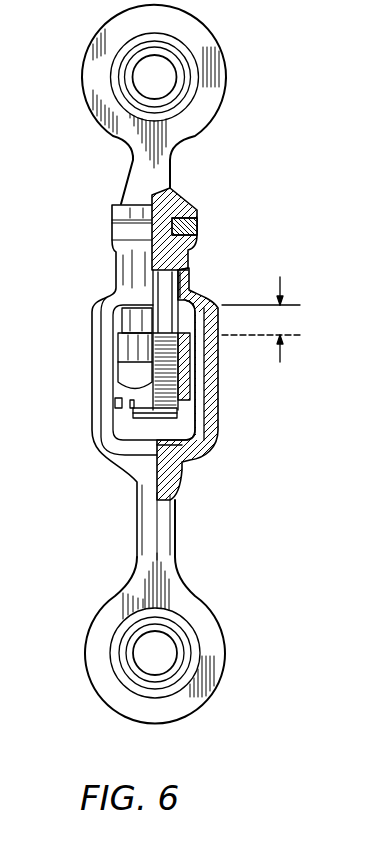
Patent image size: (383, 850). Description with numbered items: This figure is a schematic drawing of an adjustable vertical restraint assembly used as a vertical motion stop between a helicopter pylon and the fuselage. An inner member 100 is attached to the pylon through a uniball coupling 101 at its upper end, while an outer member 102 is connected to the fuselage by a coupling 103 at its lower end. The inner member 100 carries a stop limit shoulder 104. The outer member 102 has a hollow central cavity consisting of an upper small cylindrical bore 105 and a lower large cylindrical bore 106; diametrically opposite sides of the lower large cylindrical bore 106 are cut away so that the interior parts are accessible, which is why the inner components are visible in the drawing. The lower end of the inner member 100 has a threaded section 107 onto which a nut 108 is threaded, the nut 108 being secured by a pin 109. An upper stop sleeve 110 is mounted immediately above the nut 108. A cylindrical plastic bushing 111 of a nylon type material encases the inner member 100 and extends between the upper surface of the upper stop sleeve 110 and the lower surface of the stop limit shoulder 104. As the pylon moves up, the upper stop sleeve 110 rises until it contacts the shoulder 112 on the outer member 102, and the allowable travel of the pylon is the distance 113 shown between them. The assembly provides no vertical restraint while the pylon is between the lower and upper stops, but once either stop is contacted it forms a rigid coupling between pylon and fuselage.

The inner member 100 is at (180, 198).
The uniball coupling 101 is at (155, 77).
The outer member 102 is at (170, 463).
The coupling 103 is at (153, 655).
The stop limit shoulder 104 is at (198, 221).
The upper small cylindrical bore 105 is at (185, 272).
The lower large cylindrical bore 106 is at (198, 378).
The threaded section 107 is at (178, 415).
The nut 108 is at (125, 377).
The pin 109 is at (115, 408).
The upper stop sleeve 110 is at (182, 350).
The plastic bushing 111 is at (192, 280).
The shoulder 112 is at (215, 303).
The distance 113 is at (290, 327).